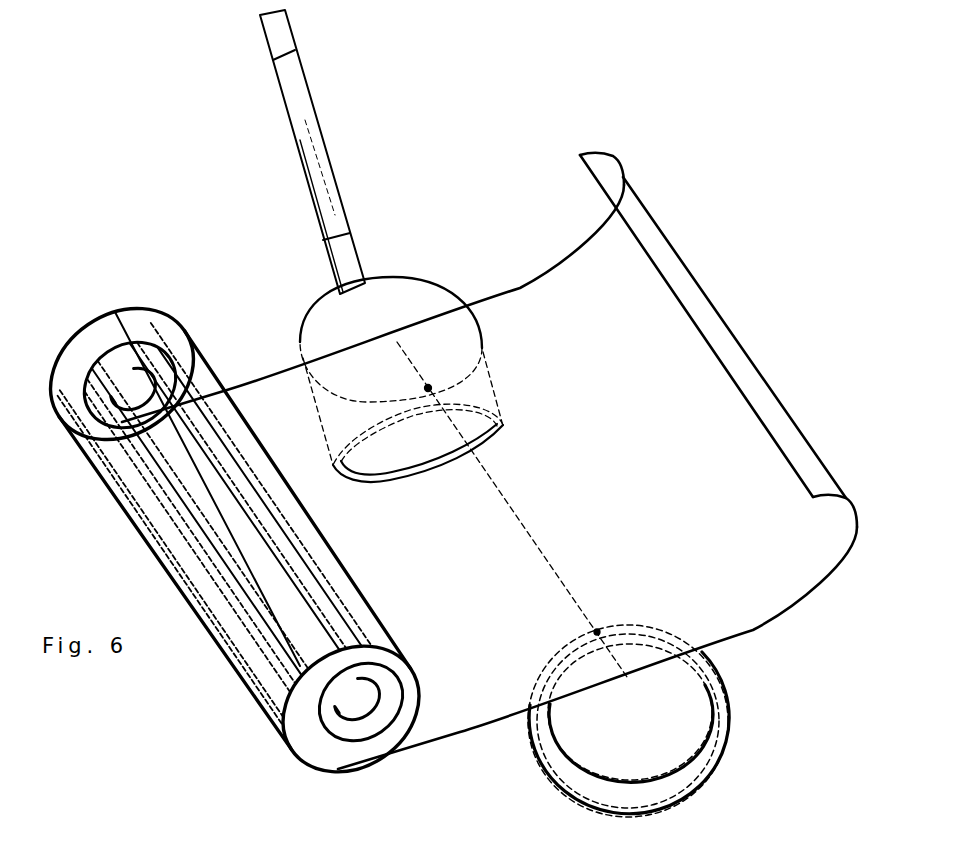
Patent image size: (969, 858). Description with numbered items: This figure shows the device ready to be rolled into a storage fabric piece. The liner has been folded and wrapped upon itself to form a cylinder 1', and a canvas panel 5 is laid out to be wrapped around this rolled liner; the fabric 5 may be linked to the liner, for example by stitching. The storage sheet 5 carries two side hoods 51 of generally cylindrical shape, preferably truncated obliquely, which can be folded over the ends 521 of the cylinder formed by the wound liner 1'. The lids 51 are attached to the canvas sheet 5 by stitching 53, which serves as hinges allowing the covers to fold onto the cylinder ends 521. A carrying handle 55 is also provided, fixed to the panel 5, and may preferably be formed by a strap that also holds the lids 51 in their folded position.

The cylinder 1' is at (234, 540).
The canvas panel 5 is at (743, 603).
The side hood 51 is at (410, 298).
The end of the cylinder 521 is at (486, 708).
The stitching 53 is at (493, 388).
The carrying handle 55 is at (300, 115).